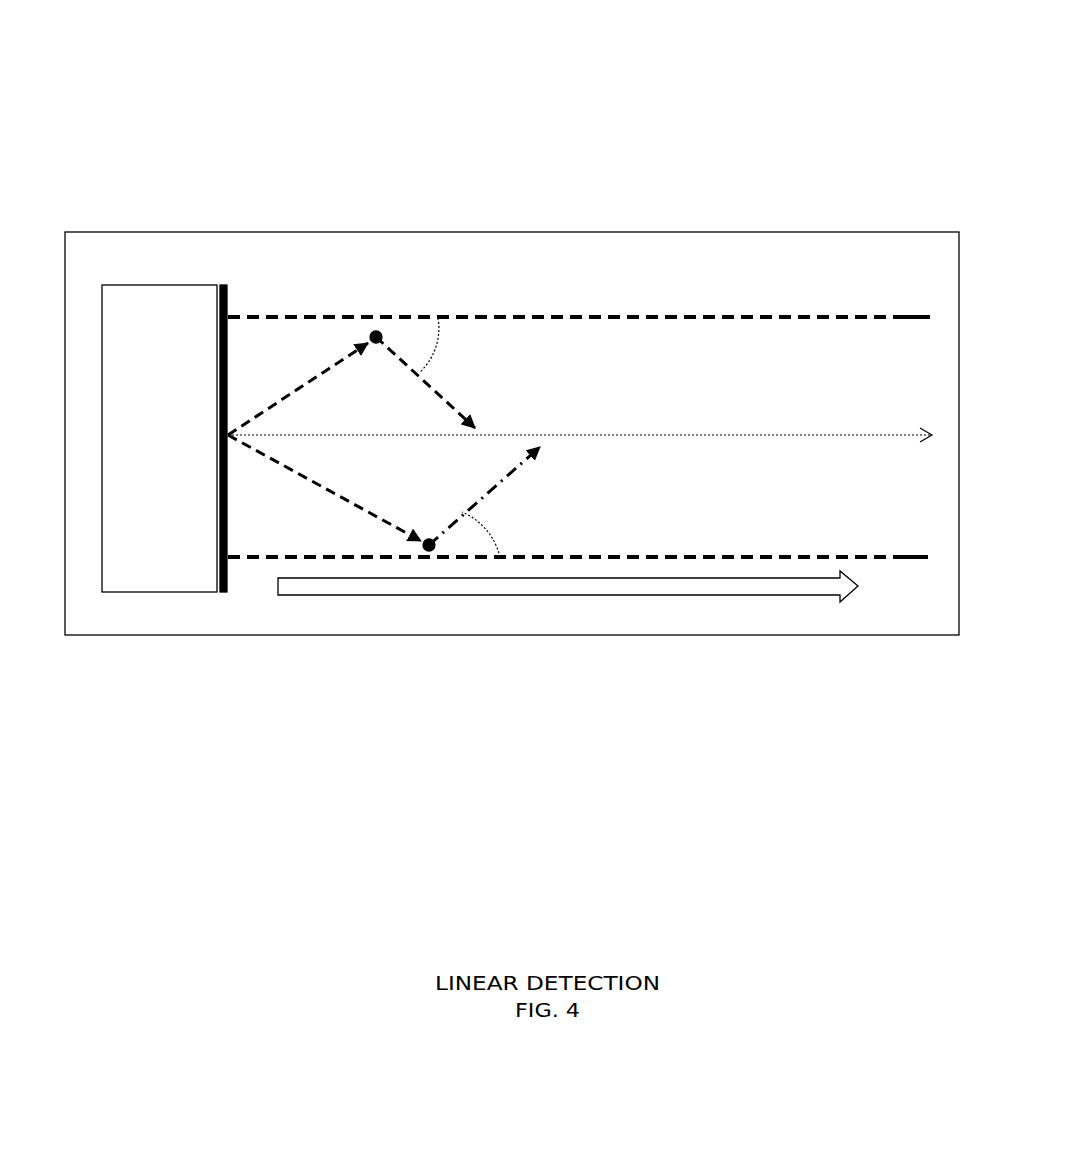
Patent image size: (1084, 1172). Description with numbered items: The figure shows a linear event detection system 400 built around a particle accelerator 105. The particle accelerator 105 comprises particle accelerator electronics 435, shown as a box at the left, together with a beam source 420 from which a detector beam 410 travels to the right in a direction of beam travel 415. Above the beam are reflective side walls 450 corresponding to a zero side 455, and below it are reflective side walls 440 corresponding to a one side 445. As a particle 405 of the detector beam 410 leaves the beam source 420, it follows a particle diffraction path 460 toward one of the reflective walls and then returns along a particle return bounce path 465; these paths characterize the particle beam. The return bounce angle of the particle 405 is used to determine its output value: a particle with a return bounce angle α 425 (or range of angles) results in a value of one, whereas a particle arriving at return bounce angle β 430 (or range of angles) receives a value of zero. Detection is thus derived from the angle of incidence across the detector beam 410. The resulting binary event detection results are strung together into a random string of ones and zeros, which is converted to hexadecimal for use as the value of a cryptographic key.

The linear event detection system 400 is at (80, 27).
The particle accelerator 105 is at (607, 230).
The particle 405 is at (366, 329).
The detector beam 410 is at (852, 432).
The direction of beam travel 415 is at (568, 595).
The beam source 420 is at (215, 432).
The return bounce angle α 425 is at (443, 560).
The return bounce angle β 430 is at (398, 313).
The particle accelerator electronics 435 is at (165, 595).
The reflective side walls 440 is at (563, 545).
The "1" side 445 is at (918, 560).
The reflective side walls 450 is at (548, 311).
The "0" side 455 is at (920, 310).
The particle diffraction path 460 is at (280, 420).
The particle return bounce path 465 is at (320, 458).